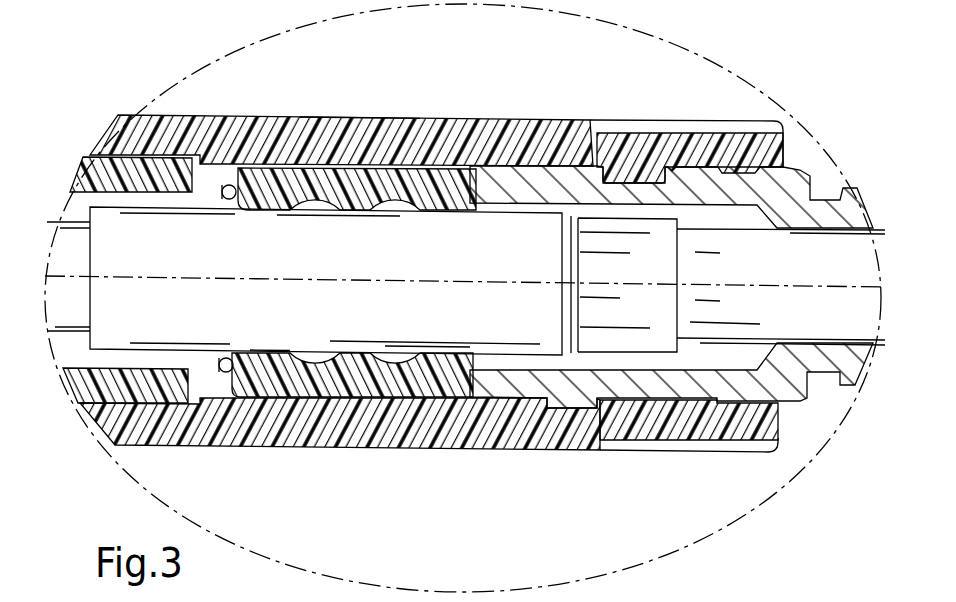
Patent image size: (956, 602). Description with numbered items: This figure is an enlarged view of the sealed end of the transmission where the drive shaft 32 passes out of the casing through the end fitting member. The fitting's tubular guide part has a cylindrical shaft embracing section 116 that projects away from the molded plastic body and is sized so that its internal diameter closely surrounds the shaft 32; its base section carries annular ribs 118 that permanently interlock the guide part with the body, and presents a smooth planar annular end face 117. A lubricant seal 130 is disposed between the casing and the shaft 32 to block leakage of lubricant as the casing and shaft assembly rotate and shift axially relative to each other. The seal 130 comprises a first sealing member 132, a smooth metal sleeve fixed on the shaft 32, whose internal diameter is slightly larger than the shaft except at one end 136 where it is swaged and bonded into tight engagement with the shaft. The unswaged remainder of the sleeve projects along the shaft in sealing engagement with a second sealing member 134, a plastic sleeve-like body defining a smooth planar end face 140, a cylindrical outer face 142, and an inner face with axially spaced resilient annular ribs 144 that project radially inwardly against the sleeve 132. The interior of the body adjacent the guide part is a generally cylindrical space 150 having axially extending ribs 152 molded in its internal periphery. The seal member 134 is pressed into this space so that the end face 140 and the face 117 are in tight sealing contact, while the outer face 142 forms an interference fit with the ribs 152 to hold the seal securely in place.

The shaft 32 is at (818, 260).
The shaft embracing section 116 is at (812, 380).
The annular end face 117 is at (472, 385).
The annular ribs 118 is at (687, 165).
The lubricant seal 130 is at (340, 450).
The first sealing member 132 is at (458, 265).
The second sealing member 134 is at (268, 340).
The end 136 is at (640, 273).
The planar end face 140 is at (493, 160).
The cylindrical outer face 142 is at (352, 140).
The annular ribs 144 is at (432, 206).
The cylindrical space 150 is at (220, 390).
The axially extending ribs 152 is at (216, 158).